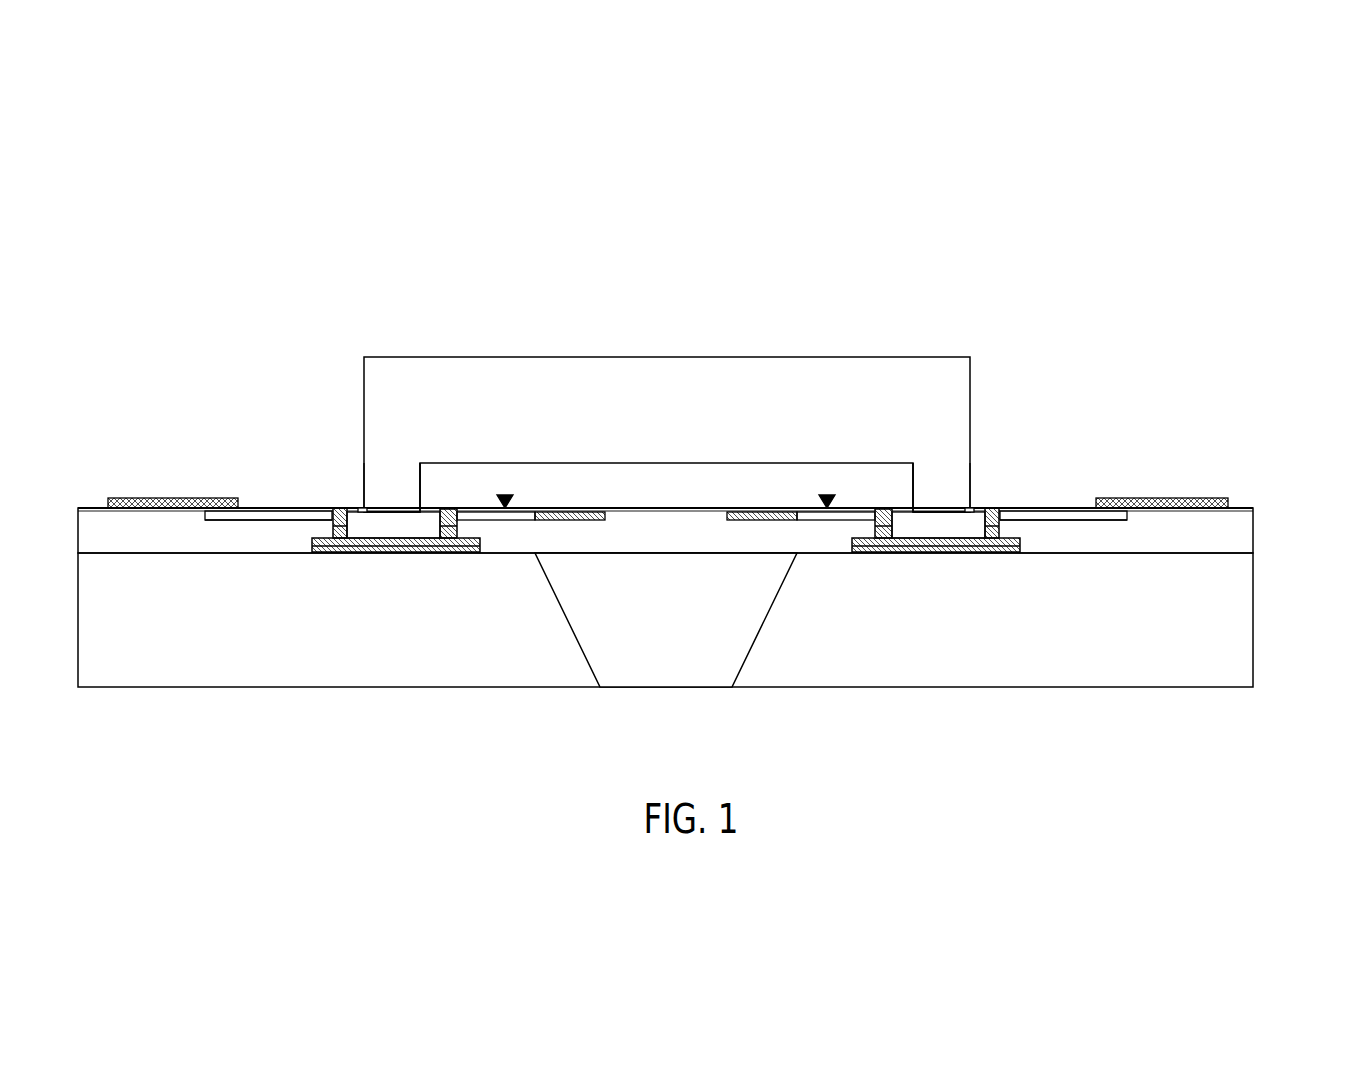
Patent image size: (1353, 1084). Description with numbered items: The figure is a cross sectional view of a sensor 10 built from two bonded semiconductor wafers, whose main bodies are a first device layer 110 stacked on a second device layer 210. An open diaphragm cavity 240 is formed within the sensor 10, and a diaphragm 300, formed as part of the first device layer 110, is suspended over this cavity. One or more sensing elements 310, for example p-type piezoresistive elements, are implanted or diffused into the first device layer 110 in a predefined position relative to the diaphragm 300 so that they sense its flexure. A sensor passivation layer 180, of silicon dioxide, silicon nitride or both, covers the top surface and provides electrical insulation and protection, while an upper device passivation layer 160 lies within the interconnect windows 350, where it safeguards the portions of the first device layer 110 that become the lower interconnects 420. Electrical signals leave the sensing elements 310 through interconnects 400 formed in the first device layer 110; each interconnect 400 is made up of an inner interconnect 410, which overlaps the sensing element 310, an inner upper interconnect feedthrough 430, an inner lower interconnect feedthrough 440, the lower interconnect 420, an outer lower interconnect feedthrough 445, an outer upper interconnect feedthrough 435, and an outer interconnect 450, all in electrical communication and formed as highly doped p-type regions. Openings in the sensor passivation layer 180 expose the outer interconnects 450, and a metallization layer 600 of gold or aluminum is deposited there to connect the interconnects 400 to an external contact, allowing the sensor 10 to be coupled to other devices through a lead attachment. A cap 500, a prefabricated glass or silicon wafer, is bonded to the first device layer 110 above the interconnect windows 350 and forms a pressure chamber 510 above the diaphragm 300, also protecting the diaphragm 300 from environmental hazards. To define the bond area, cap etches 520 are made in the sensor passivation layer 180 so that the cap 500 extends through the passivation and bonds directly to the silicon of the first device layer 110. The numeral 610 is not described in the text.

The sensor 10 is at (893, 219).
The first device layer 110 is at (1253, 530).
The upper device passivation layer 160 is at (310, 543).
The sensor passivation layer 180 is at (1253, 508).
The second device layer 210 is at (1253, 603).
The open diaphragm cavity 240 is at (660, 675).
The diaphragm 300 is at (652, 545).
The sensing elements 310 is at (537, 511).
The interconnect windows 350 is at (303, 556).
The interconnects 400 is at (505, 494).
The inner interconnect 410 is at (477, 506).
The lower interconnect 420 is at (445, 550).
The inner upper interconnect feedthrough 430 is at (470, 518).
The outer upper interconnect feedthrough 435 is at (338, 515).
The inner lower interconnect feedthrough 440 is at (456, 528).
The outer lower interconnect feedthrough 445 is at (307, 517).
The outer interconnect 450 is at (140, 495).
The cap 500 is at (957, 350).
The pressure chamber 510 is at (905, 445).
The cap etches 520 is at (360, 508).
The metallization layer 600 is at (190, 533).
The surface trace 610 is at (245, 525).